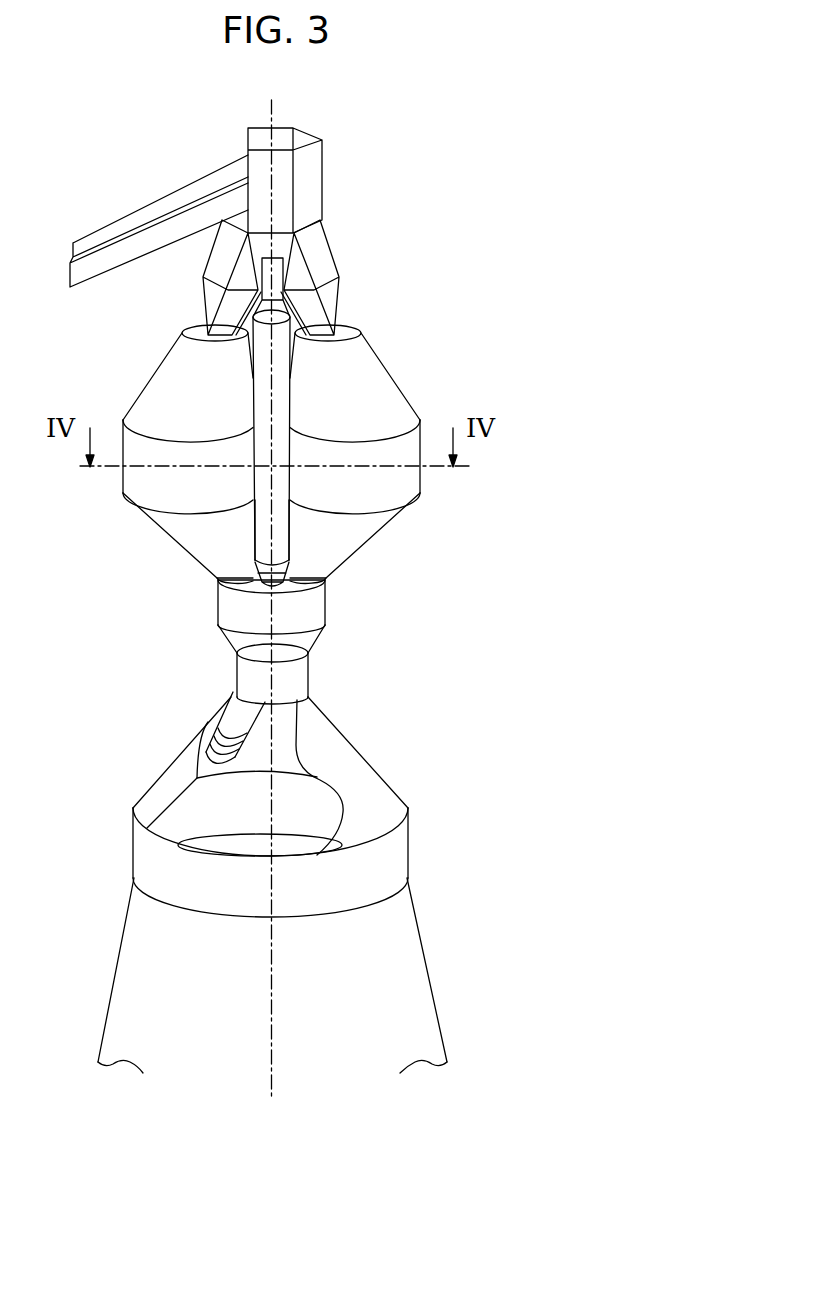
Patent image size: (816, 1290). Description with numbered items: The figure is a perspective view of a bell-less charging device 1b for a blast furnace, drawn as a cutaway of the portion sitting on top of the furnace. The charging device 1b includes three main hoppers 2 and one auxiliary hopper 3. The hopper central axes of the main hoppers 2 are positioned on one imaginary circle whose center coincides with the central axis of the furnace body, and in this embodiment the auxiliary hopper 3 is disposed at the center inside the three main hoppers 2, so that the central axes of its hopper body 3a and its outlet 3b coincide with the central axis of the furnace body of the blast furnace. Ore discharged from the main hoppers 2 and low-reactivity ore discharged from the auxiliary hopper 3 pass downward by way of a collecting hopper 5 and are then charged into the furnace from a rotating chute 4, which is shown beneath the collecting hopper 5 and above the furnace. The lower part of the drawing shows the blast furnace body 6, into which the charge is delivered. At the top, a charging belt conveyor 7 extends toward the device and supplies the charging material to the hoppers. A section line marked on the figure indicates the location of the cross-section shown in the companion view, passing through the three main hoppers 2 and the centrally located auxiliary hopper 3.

The bell-less charging device 1b is at (382, 300).
The main hopper 2 is at (395, 400).
The auxiliary hopper 3 is at (261, 362).
The hopper body 3a is at (278, 528).
The outlet 3b is at (287, 566).
The rotating chute 4 is at (230, 727).
The collecting hopper 5 is at (230, 612).
The blast furnace body 6 is at (161, 795).
The charging belt conveyor 7 is at (113, 228).